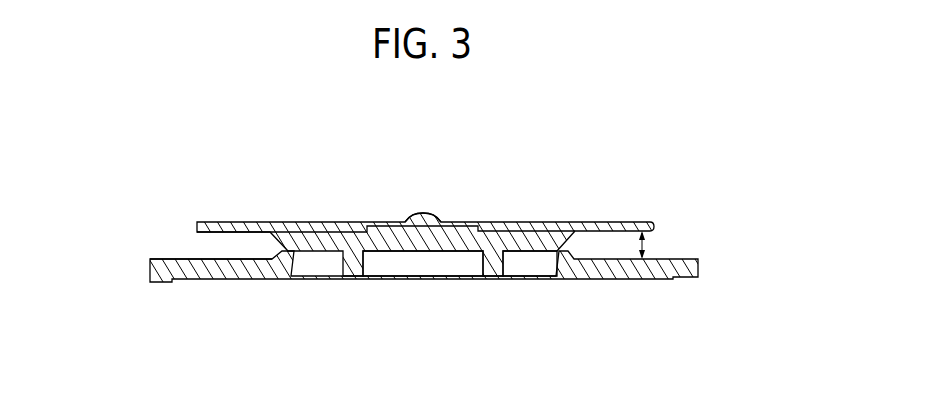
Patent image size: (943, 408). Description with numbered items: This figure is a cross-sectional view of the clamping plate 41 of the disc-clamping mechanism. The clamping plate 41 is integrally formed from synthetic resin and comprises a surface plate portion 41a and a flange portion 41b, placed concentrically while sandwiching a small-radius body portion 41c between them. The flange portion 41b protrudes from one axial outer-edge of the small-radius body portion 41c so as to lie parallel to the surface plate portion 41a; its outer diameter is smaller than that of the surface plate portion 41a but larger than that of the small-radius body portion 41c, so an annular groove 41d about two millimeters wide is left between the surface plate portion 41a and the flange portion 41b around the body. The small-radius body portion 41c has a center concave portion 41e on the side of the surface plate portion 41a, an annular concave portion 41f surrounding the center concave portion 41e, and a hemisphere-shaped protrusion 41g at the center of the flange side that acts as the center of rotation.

The clamping plate 41 is at (431, 254).
The surface plate portion 41a is at (700, 278).
The flange portion 41b is at (650, 223).
The small-radius body portion 41c is at (533, 222).
The annular groove 41d is at (208, 245).
The center concave portion 41e is at (424, 262).
The annular concave portion 41f is at (532, 265).
The hemisphere-shaped protrusion 41g is at (425, 214).